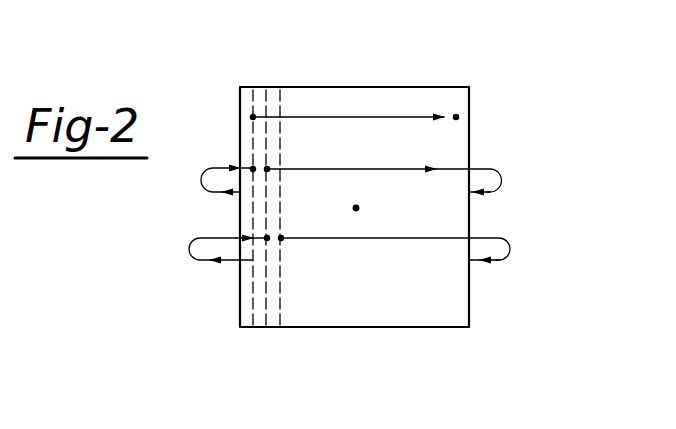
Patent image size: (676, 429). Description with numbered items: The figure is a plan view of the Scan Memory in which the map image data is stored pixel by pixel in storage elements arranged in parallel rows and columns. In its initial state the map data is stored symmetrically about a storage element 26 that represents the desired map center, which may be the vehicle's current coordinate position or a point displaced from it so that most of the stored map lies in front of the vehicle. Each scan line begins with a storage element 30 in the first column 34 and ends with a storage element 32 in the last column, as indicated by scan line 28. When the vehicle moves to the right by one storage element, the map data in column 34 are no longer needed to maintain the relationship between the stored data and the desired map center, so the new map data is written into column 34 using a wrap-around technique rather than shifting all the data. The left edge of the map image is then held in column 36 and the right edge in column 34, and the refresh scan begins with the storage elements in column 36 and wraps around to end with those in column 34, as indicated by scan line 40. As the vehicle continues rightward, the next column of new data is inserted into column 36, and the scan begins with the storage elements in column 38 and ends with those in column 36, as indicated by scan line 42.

The storage element 26 is at (359, 208).
The scan line 28 is at (360, 117).
The storage element 30 is at (251, 117).
The storage element 32 is at (455, 120).
The first column 34 is at (256, 97).
The column 36 is at (270, 97).
The column 38 is at (282, 97).
The scan line 40 is at (490, 168).
The scan line 42 is at (207, 238).